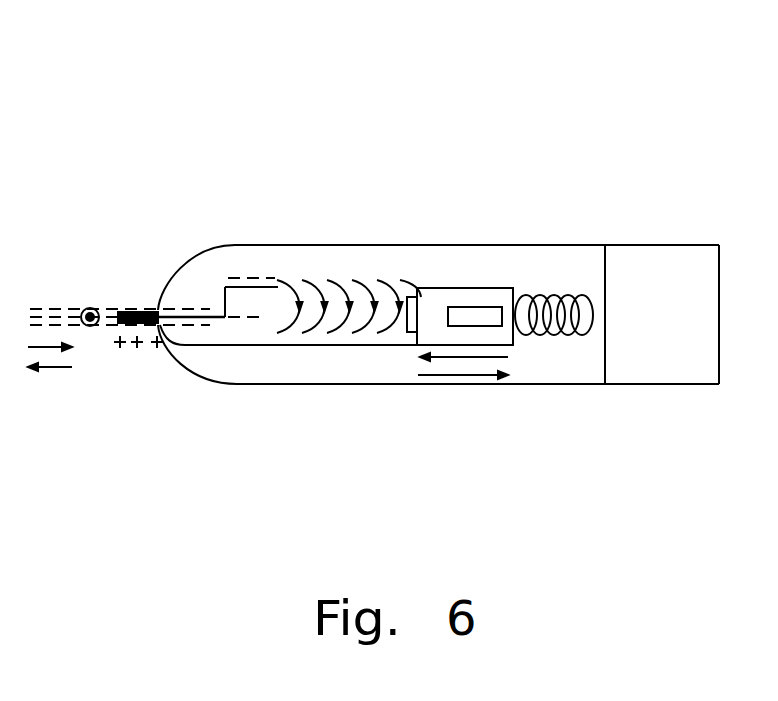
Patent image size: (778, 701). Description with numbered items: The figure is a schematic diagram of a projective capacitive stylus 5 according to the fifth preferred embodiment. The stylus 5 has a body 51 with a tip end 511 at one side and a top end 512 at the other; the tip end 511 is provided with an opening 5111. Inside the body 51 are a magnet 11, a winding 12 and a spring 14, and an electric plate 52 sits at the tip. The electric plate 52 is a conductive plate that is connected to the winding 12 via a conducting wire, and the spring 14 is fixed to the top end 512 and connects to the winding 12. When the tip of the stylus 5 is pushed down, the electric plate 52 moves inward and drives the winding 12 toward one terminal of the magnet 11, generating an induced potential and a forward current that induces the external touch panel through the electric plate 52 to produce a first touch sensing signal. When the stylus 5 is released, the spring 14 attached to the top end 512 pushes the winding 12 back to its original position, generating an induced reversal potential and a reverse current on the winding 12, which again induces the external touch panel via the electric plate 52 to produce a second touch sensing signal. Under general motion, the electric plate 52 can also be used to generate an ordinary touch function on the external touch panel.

The projective capacitive stylus 5 is at (630, 55).
The body 51 is at (395, 245).
The tip end 511 is at (178, 370).
The top end 512 is at (605, 285).
The opening 5111 is at (140, 326).
The electric plate 52 is at (131, 308).
The winding 12 is at (310, 360).
The magnet 11 is at (435, 310).
The spring 14 is at (555, 333).